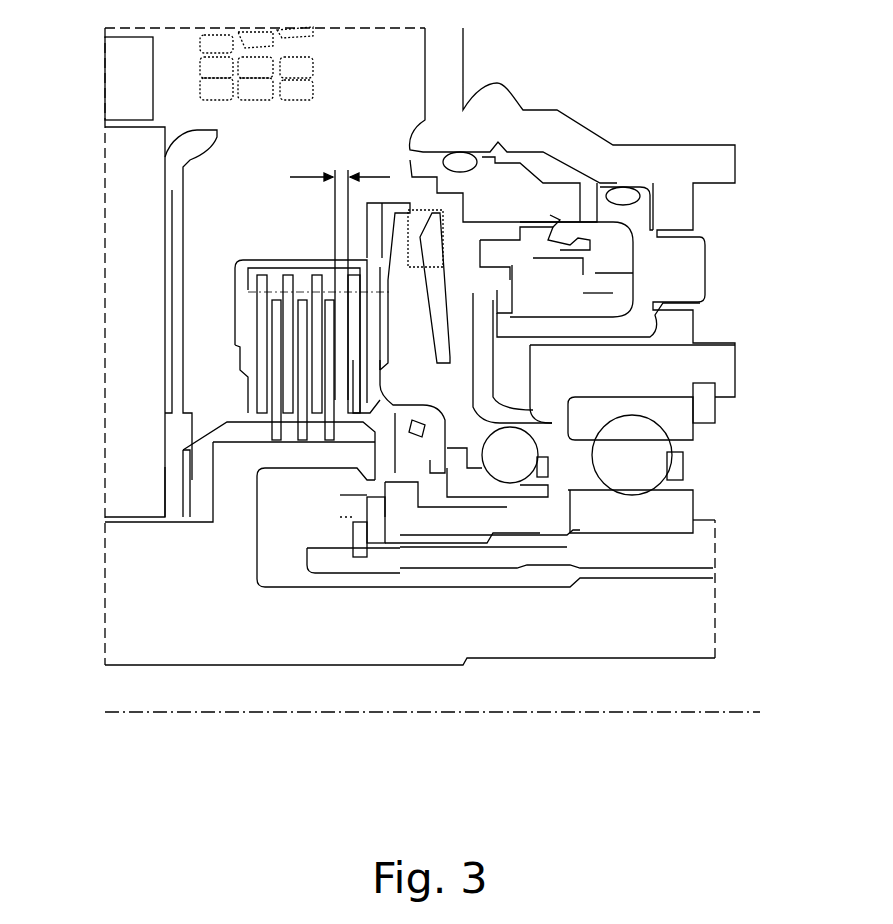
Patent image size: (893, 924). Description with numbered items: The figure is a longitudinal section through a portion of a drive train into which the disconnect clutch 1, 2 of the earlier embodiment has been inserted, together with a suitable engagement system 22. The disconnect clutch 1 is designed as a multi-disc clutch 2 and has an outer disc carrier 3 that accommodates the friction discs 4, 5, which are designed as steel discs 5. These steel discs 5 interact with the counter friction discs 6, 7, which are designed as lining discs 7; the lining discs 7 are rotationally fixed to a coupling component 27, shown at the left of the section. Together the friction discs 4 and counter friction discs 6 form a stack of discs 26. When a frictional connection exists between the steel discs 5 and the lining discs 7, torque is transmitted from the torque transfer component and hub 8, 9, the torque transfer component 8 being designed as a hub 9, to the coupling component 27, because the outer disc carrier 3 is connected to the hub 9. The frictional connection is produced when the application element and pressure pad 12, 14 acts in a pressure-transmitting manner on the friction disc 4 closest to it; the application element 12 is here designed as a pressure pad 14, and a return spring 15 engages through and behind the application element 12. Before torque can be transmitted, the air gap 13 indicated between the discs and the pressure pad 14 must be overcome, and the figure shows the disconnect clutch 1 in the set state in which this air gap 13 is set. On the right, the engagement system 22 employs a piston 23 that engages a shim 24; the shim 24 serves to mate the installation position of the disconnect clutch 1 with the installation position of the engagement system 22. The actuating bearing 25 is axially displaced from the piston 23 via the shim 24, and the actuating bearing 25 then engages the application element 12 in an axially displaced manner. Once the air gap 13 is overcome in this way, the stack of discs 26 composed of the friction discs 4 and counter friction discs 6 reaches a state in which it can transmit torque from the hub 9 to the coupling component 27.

The clutch / friction clutch 1, 2 is at (307, 335).
The disconnect clutch 1 is at (307, 335).
The multi-disc clutch 2 is at (307, 335).
The outer disc carrier 3 is at (305, 268).
The outer friction plates 4, 5 is at (308, 399).
The friction discs 4 is at (308, 399).
The steel discs 5 is at (290, 420).
The inner friction plates 6, 7 is at (315, 404).
The counter friction discs 6 is at (315, 404).
The lining discs 7 is at (320, 420).
The bearing 8, 9 is at (599, 568).
The torque transfer component 8 is at (599, 568).
The hub 9 is at (467, 522).
The actuating element 12, 14 is at (392, 575).
The application element 12 is at (392, 575).
The pressure pad 14 is at (432, 455).
The air gap 13 is at (432, 215).
The return spring 15 is at (427, 240).
The engagement system 22 is at (578, 244).
The piston 23 is at (575, 268).
The shim 24 is at (503, 287).
The actuating bearing 25 is at (510, 503).
The stack of discs 26 is at (307, 522).
The coupling component 27 is at (228, 477).